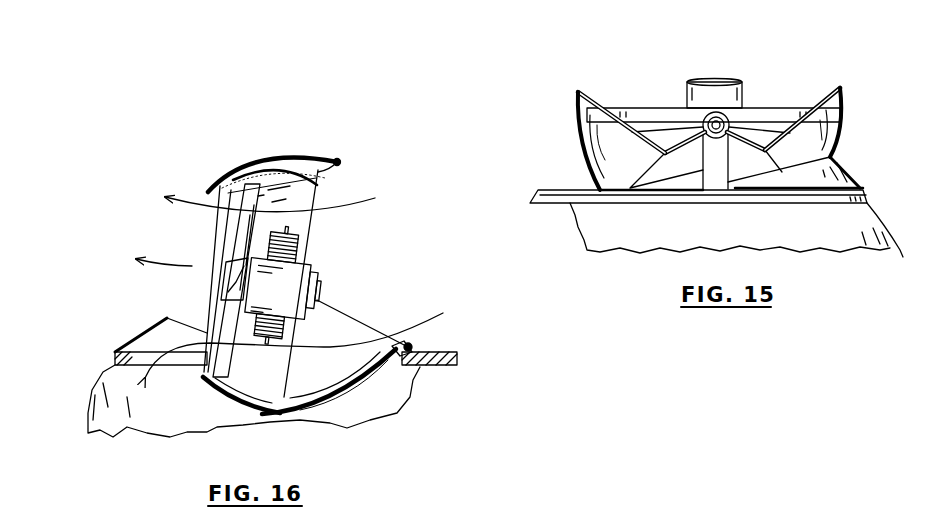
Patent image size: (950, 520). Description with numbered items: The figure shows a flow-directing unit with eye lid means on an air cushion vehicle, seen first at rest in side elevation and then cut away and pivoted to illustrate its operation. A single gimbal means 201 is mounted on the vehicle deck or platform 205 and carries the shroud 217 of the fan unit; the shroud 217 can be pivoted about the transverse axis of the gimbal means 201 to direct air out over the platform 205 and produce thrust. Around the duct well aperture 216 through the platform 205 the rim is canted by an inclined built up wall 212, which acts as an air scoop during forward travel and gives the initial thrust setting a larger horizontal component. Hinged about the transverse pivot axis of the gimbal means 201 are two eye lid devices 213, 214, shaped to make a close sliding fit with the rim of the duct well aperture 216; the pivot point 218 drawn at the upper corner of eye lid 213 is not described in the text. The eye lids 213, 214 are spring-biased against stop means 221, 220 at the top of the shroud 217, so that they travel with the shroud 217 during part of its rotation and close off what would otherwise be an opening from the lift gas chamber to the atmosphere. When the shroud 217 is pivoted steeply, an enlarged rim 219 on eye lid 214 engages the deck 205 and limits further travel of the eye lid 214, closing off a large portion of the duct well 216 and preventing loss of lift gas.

In FIG. 15, the gimbal means 201 is at (759, 76).
In FIG. 16, the platform 205 is at (440, 366).
In FIG. 15, the platform 205 is at (568, 190).
In FIG. 16, the inclined built up wall 212 is at (148, 332).
In FIG. 15, the inclined built up wall 212 is at (848, 183).
In FIG. 16, the eye lid device 213 is at (282, 158).
In FIG. 15, the eye lid device 213 is at (830, 117).
In FIG. 16, the eye lid device 214 is at (333, 320).
In FIG. 15, the eye lid device 214 is at (582, 128).
In FIG. 16, the duct well aperture 216 is at (173, 375).
In FIG. 16, the shroud 217 is at (307, 199).
In FIG. 15, the shroud 217 is at (647, 112).
In FIG. 16, the pivot pin 218 is at (338, 160).
In FIG. 15, the pivot pin 218 is at (841, 86).
In FIG. 16, the enlarged rim 219 is at (415, 346).
In FIG. 15, the enlarged rim 219 is at (578, 92).
In FIG. 16, the stop means 220 is at (310, 340).
In FIG. 16, the stop means 221 is at (334, 166).